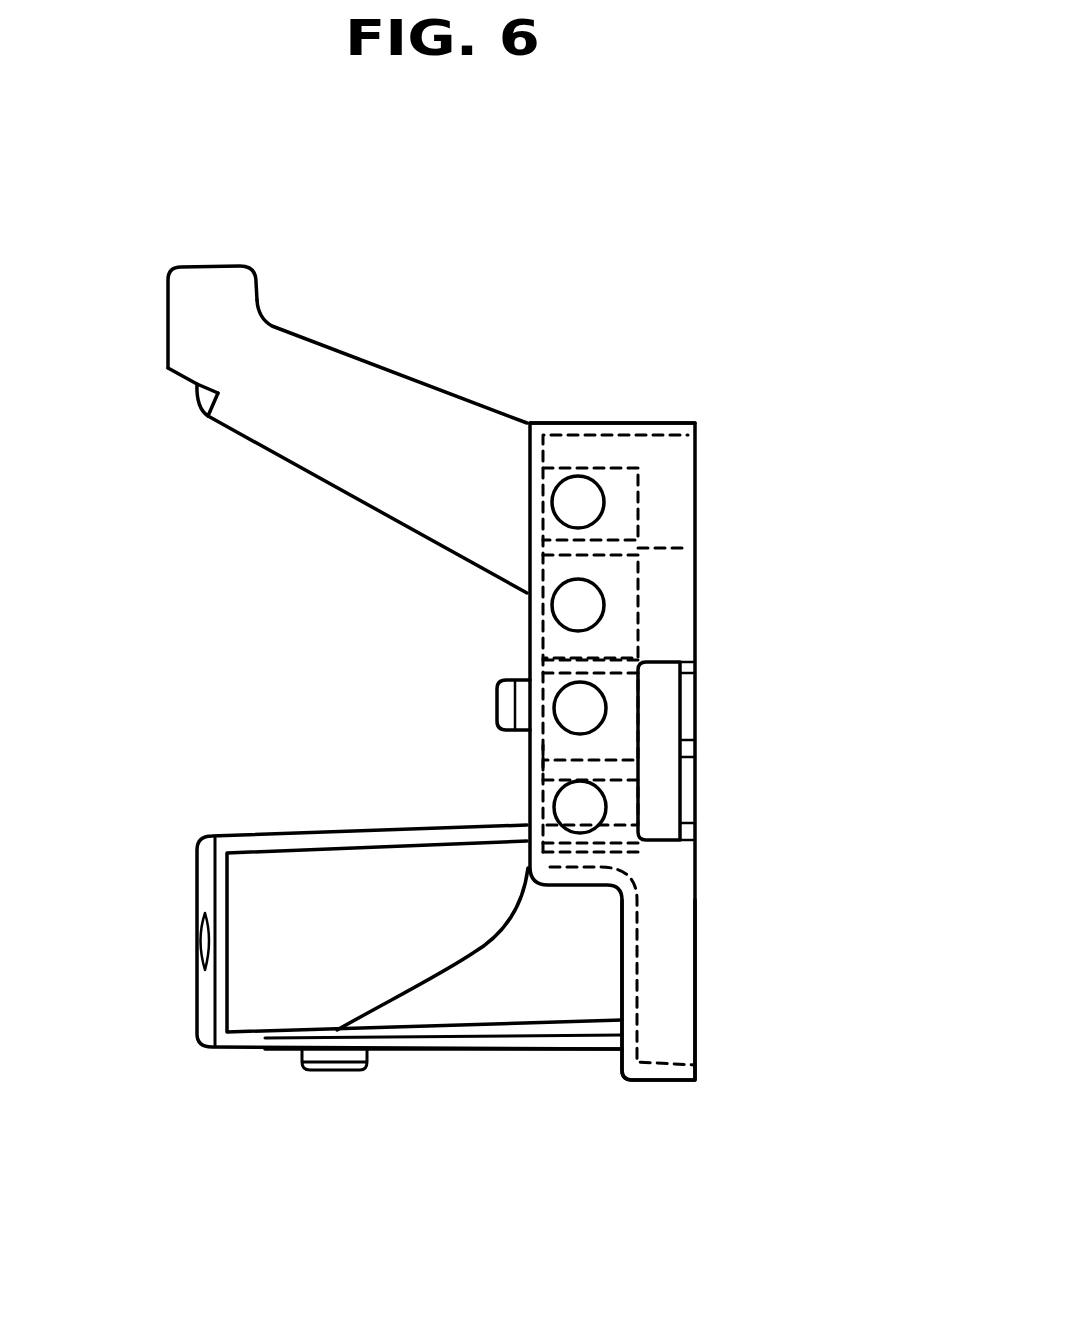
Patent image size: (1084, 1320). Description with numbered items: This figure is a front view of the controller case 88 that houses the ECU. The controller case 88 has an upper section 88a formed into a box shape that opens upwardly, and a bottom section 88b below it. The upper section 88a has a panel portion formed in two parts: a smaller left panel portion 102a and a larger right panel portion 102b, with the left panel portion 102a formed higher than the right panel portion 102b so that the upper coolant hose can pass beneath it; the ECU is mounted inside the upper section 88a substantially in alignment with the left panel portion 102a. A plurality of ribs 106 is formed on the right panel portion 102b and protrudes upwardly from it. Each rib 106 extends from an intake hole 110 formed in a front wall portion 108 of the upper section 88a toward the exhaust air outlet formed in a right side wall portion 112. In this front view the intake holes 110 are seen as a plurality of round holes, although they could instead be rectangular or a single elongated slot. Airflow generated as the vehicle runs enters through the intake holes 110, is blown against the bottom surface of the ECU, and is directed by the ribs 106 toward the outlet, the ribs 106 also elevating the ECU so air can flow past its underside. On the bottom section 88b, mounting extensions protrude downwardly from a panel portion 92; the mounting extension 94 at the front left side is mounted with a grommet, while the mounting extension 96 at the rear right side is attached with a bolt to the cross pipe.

The controller case 88 is at (642, 384).
The upper section 88a is at (661, 1084).
The bottom section 88b is at (417, 1051).
The panel portion 92 is at (530, 628).
The mounting extension 94 is at (255, 1002).
The mounting extension 96 is at (203, 302).
The left panel portion 102a is at (637, 975).
The right panel portion 102b is at (540, 757).
The ribs 106 is at (665, 548).
The front wall portion 108 is at (657, 460).
The intake hole 110 is at (597, 506).
The right side wall portion 112 is at (588, 421).